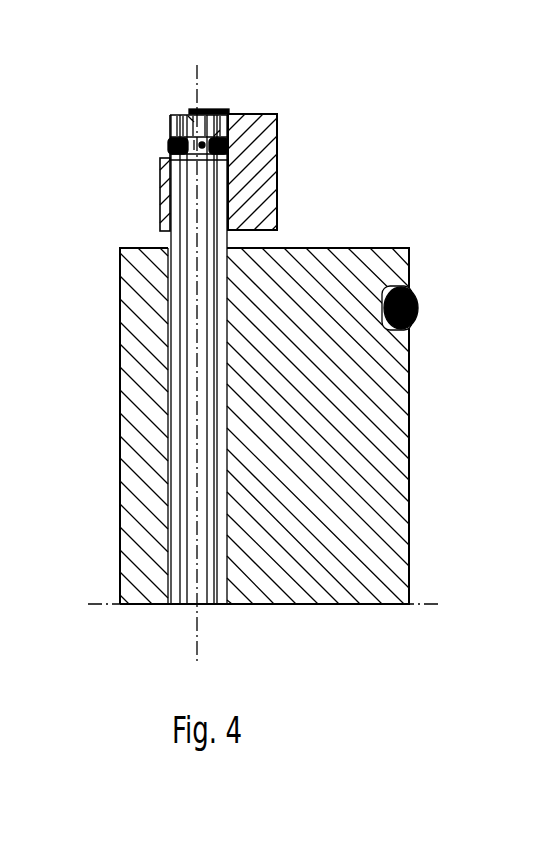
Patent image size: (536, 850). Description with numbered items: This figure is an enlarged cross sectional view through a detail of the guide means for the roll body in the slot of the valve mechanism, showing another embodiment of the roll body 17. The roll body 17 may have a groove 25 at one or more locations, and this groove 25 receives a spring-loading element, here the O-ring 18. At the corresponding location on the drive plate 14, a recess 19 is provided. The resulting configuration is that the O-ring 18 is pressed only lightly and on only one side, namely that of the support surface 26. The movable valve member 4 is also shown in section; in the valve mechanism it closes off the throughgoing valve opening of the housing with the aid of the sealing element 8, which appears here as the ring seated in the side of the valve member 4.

The movable valve member 4 is at (314, 408).
The sealing element 8 is at (422, 290).
The drive plate 14 is at (253, 148).
The roll body 17 is at (188, 510).
The O-ring 18 is at (169, 143).
The recess 19 is at (163, 122).
The groove 25 is at (217, 110).
The support surface 26 is at (169, 350).